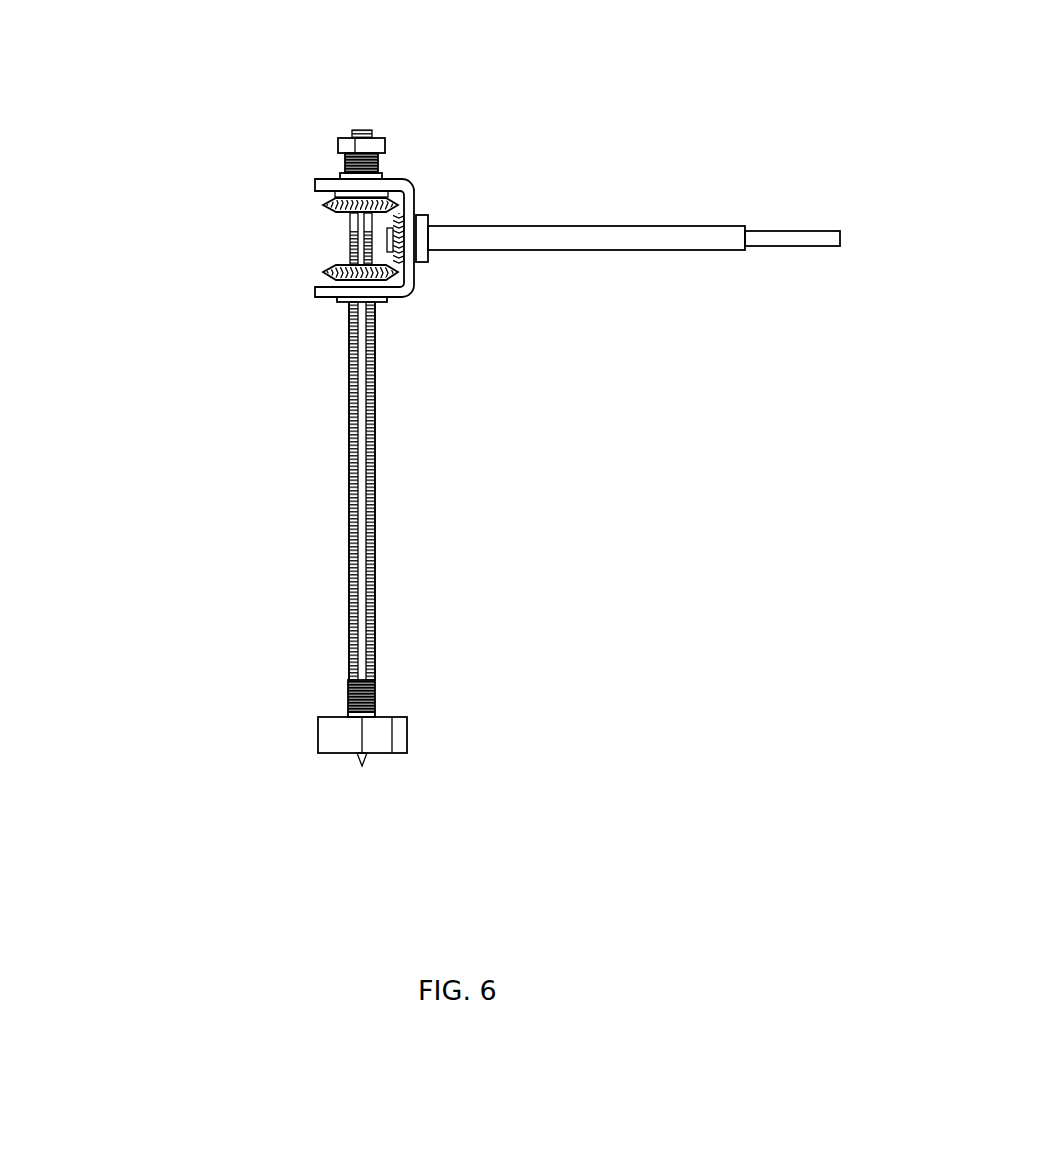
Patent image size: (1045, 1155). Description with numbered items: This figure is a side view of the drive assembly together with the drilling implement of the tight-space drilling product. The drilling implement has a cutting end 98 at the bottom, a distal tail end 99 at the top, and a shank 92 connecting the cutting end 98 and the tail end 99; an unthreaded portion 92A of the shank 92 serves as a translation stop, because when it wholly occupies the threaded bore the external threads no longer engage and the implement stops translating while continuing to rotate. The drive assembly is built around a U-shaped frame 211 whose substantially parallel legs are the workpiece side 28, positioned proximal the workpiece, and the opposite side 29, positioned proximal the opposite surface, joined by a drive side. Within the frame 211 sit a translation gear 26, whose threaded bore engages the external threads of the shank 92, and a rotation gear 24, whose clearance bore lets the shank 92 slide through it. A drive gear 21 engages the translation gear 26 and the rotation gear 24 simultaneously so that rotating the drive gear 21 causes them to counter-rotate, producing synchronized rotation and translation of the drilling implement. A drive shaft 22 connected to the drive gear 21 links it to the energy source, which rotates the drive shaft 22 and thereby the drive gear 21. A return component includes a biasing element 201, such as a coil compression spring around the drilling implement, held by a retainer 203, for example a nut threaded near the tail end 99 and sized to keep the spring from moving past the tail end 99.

The drive gear 21 is at (428, 216).
The drive shaft 22 is at (623, 226).
The frame 211 is at (410, 293).
The retainer 203 is at (378, 138).
The tail end 99 is at (353, 130).
The biasing element 201 is at (343, 158).
The opposite side 29 is at (388, 178).
The translation gear 26 is at (323, 206).
The rotation gear 24 is at (323, 272).
The unthreaded portion 92A is at (349, 223).
The workpiece side 28 is at (393, 301).
The shank 92 is at (375, 487).
The cutting end 98 is at (362, 760).